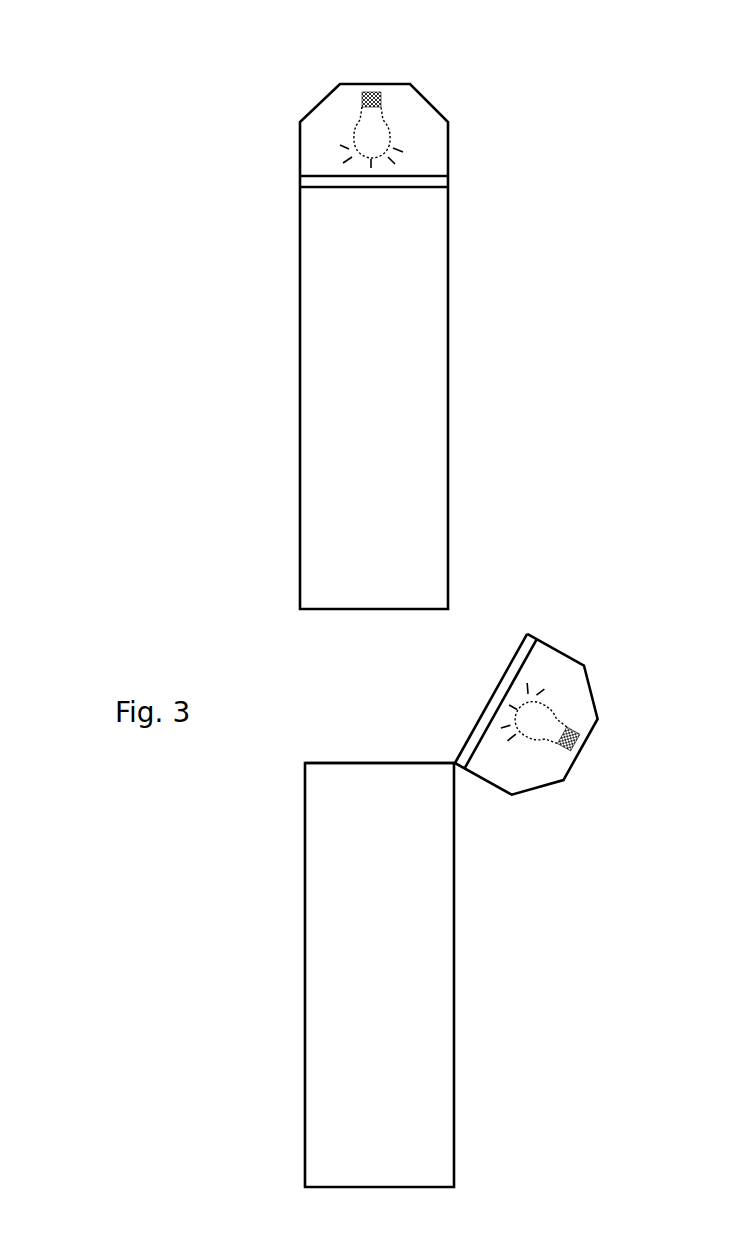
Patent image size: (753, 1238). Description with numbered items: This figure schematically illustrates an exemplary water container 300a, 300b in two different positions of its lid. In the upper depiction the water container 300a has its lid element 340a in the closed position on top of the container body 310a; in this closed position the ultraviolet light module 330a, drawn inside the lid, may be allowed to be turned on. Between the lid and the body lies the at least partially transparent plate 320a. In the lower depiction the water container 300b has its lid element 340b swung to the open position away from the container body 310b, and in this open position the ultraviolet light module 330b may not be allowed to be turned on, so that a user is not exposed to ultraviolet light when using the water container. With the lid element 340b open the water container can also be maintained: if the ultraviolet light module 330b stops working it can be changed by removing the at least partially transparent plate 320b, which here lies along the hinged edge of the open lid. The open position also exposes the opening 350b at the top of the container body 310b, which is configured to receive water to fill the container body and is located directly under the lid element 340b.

The water container 300a is at (228, 205).
The container body 310a is at (300, 266).
The at least partially transparent plate 320a is at (389, 183).
The ultraviolet light module 330a is at (387, 126).
The lid element 340a is at (323, 104).
The water container 300b is at (470, 971).
The container body 310b is at (305, 914).
The at least partially transparent plate 320b is at (528, 647).
The ultraviolet light module 330b is at (540, 723).
The lid element 340b is at (512, 788).
The opening 350b is at (362, 762).